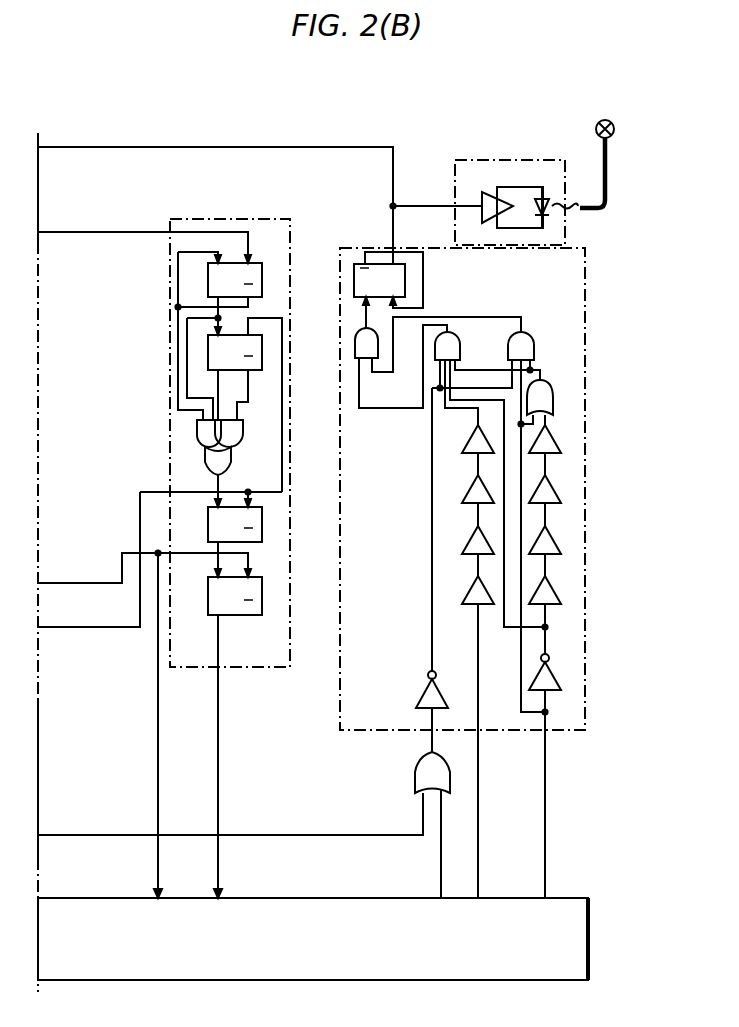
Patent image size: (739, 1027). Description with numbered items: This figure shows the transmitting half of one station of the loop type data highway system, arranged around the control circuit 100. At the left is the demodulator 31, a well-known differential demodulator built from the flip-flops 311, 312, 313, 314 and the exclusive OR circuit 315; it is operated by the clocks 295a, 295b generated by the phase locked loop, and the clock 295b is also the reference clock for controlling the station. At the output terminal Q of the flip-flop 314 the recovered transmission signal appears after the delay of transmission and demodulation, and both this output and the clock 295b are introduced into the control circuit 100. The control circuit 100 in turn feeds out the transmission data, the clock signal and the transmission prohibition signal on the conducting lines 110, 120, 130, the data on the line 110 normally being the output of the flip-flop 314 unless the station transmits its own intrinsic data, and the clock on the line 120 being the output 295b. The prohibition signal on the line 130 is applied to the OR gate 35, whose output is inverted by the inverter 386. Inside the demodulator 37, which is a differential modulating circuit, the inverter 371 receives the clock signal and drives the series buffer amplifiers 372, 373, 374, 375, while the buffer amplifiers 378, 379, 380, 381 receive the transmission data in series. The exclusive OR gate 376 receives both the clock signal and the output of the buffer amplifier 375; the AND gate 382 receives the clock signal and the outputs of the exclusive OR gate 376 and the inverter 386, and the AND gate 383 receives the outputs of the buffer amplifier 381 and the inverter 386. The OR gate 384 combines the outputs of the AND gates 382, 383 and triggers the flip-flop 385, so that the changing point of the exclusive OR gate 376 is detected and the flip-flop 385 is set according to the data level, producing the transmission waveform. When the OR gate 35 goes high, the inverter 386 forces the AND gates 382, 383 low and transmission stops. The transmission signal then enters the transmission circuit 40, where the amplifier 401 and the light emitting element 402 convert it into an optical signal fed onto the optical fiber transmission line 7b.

The demodulator 31 is at (232, 219).
The flip-flop 311 is at (262, 279).
The flip-flop 312 is at (262, 352).
The flip-flop 313 is at (262, 527).
The flip-flop 314 is at (262, 596).
The exclusive OR circuit 315 is at (274, 463).
The counter output 295a is at (49, 627).
The counter output 295b is at (49, 583).
The transmission circuit 40 is at (518, 160).
The amplifier 401 is at (482, 196).
The light emitting element 402 is at (542, 197).
The transmission line 7b is at (609, 160).
The demodulator 37 is at (586, 289).
The flip-flop 385 is at (405, 279).
The OR gate 384 is at (378, 345).
The AND gate 383 is at (458, 338).
The AND gate 382 is at (533, 338).
The exclusive OR gate 376 is at (553, 400).
The buffer amplifier 375 is at (558, 447).
The buffer amplifier 374 is at (558, 497).
The buffer amplifier 373 is at (558, 547).
The buffer amplifier 372 is at (558, 596).
The inverter 371 is at (560, 684).
The buffer amplifier 381 is at (465, 442).
The buffer amplifier 380 is at (465, 495).
The buffer amplifier 379 is at (465, 546).
The buffer amplifier 378 is at (465, 596).
The inverter 386 is at (418, 695).
The OR gate 35 is at (416, 775).
The conducting line 130 is at (441, 868).
The conducting line 110 is at (478, 868).
The conducting line 120 is at (546, 868).
The control circuit 100 is at (589, 940).